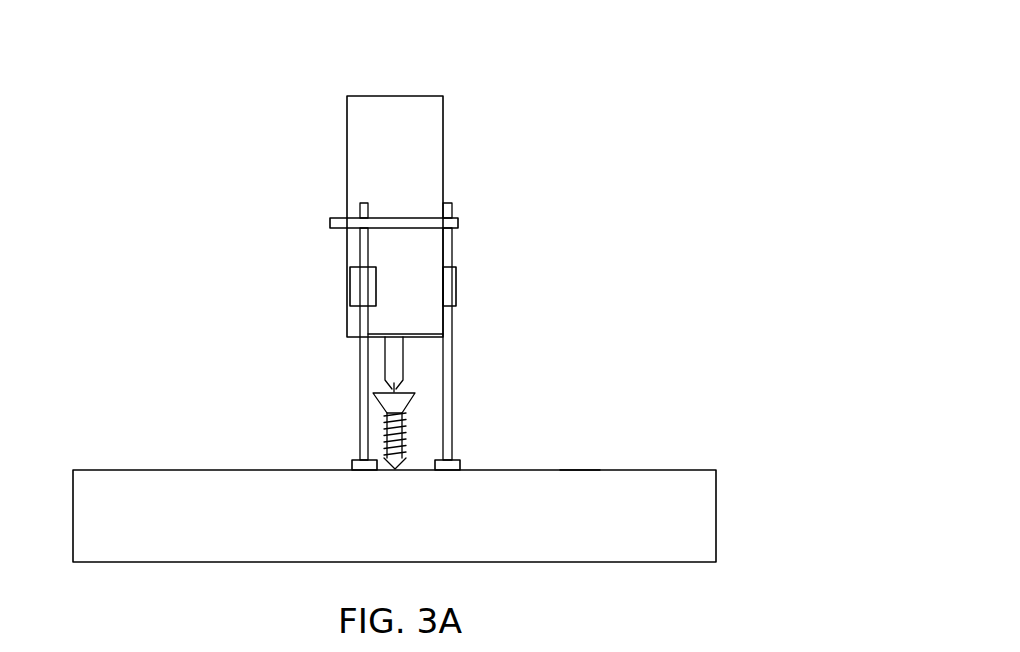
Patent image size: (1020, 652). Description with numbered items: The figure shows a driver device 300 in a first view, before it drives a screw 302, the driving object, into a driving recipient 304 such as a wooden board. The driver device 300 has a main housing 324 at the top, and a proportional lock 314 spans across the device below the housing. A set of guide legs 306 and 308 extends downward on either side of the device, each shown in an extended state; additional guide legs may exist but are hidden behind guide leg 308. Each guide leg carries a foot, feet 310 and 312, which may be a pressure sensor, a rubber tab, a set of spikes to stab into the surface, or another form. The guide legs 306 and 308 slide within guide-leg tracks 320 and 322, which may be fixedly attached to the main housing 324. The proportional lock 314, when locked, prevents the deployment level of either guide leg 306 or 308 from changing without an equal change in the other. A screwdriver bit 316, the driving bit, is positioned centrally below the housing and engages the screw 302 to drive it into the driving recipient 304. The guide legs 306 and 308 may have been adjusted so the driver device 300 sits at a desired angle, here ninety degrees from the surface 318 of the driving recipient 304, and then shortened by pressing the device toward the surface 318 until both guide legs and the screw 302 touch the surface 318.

The driver device 300 is at (310, 73).
The main housing 324 is at (435, 107).
The proportional lock 314 is at (427, 222).
The guide-leg track 322 is at (360, 280).
The guide-leg track 320 is at (449, 275).
The guide leg 308 is at (363, 348).
The guide leg 306 is at (447, 328).
The screwdriver bit 316 is at (393, 360).
The screw 302 is at (387, 422).
The foot 312 is at (358, 467).
The foot 310 is at (450, 467).
The surface 318 is at (581, 460).
The driving recipient 304 is at (702, 490).